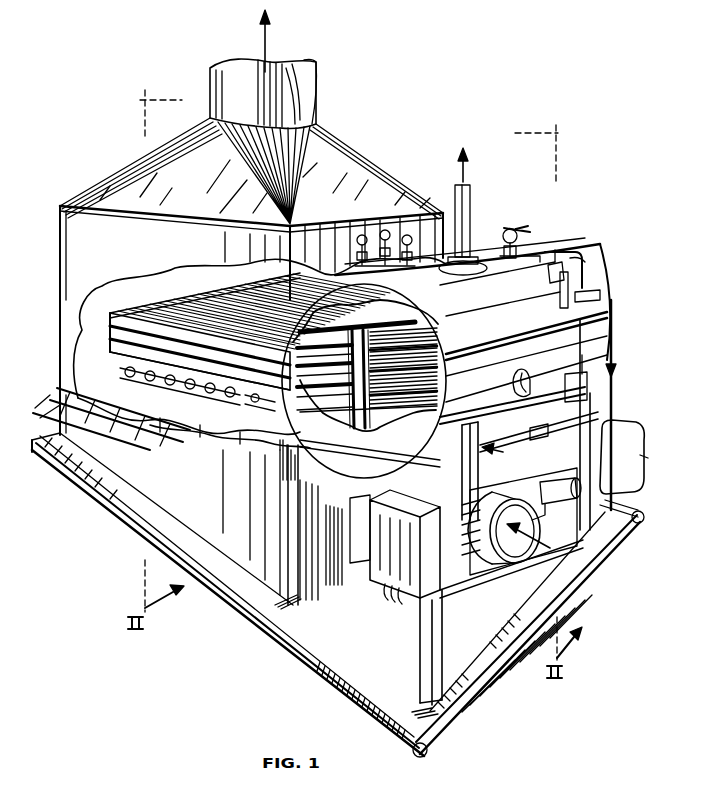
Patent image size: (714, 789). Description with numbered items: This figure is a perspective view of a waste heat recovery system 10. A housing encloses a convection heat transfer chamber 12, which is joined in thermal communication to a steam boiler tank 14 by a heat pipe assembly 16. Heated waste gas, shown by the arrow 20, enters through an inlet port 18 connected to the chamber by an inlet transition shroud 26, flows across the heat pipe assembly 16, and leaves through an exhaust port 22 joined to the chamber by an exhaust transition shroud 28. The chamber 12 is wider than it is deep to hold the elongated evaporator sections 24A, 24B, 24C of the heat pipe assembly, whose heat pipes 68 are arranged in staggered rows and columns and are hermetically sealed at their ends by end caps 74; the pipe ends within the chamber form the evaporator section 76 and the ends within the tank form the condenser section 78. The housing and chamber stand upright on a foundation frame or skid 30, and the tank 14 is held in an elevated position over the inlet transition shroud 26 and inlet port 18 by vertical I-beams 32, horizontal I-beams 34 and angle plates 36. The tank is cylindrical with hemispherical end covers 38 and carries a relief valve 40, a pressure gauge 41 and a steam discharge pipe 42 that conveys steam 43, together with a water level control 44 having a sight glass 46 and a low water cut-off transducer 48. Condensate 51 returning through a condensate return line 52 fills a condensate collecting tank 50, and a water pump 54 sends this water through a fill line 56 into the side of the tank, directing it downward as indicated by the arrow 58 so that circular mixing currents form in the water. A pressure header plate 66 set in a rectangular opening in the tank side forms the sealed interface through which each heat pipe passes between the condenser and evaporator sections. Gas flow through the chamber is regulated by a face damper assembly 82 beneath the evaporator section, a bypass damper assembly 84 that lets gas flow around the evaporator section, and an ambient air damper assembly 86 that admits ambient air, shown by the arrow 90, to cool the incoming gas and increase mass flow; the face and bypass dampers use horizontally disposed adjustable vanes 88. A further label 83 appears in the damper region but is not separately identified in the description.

The heat recovery system 10 is at (432, 147).
The convection heat transfer chamber 12 is at (61, 262).
The steam boiler tank 14 is at (605, 306).
The heat pipe assembly 16 is at (300, 288).
The inlet port 18 is at (512, 560).
The heated waste gas stream arrow 20 is at (266, 50).
The exhaust port 22 is at (317, 96).
The evaporator section 24A is at (120, 360).
The evaporator section 24B is at (75, 372).
The evaporator section 24C is at (111, 312).
The inlet transition shroud 26 is at (333, 592).
The exhaust transition shroud 28 is at (349, 149).
The support skid or foundation frame 30 is at (238, 622).
The vertical I-beams 32 is at (420, 638).
The horizontal I-beams 34 is at (510, 433).
The angle plates 36 is at (458, 408).
The hemispherical end covers 38 is at (611, 298).
The relief valve 40 is at (511, 238).
The pressure gauge 41 is at (385, 222).
The steam discharge pipe 42 is at (472, 200).
The steam 43 is at (465, 168).
The water level control 44 is at (582, 286).
The fitting 46 is at (556, 286).
The low water cut-off transducer 48 is at (549, 331).
The condensate collecting tank 50 is at (625, 460).
The condensate 51 is at (613, 350).
The condensate return line 52 is at (546, 434).
The water pump 54 is at (545, 508).
The fill line 56 is at (566, 376).
The downward water flow arrow 58 is at (512, 382).
The pressure header plate 66 is at (355, 432).
The heat pipes 68 is at (396, 405).
The end caps 74 is at (444, 356).
The evaporator section 76 is at (215, 289).
The condenser section 78 is at (498, 302).
The face damper assembly 82 is at (222, 408).
The roller 83 is at (268, 414).
The bypass damper assembly 84 is at (134, 436).
The ambient air damper assembly 86 is at (434, 450).
The adjustable vanes 88 is at (167, 432).
The ambient air flow arrow 90 is at (494, 452).